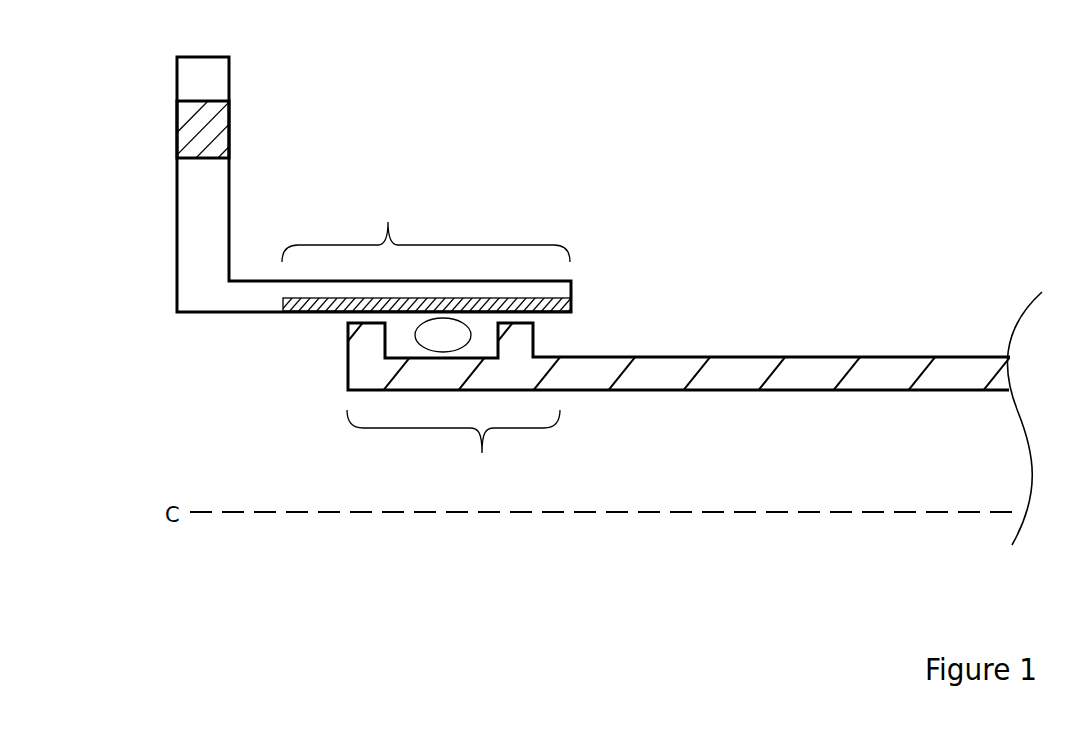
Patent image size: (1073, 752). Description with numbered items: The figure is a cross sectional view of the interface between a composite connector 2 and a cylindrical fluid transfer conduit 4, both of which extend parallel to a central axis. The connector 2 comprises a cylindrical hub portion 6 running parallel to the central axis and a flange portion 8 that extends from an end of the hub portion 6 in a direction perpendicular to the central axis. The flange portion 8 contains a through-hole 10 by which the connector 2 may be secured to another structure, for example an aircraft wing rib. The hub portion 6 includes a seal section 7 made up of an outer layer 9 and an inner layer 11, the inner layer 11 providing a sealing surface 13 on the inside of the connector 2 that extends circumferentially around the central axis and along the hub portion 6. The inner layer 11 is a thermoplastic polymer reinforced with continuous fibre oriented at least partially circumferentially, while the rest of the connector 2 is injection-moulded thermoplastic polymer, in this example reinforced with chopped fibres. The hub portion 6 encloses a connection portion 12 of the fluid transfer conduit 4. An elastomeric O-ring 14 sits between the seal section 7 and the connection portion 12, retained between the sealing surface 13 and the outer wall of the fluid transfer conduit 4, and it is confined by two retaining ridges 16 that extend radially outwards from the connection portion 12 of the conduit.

The connector 2 is at (357, 258).
The fluid transfer conduit 4 is at (652, 379).
The hub portion 6 is at (262, 302).
The seal section 7 is at (426, 226).
The flange portion 8 is at (208, 190).
The outer layer 9 is at (558, 287).
The through-hole 10 is at (207, 130).
The inner layer 11 is at (567, 308).
The connection portion 12 is at (453, 448).
The sealing surface 13 is at (312, 315).
The O-ring 14 is at (455, 340).
The retaining ridges 16 is at (516, 341).